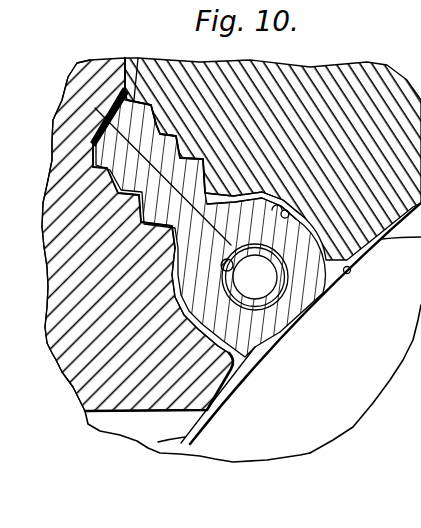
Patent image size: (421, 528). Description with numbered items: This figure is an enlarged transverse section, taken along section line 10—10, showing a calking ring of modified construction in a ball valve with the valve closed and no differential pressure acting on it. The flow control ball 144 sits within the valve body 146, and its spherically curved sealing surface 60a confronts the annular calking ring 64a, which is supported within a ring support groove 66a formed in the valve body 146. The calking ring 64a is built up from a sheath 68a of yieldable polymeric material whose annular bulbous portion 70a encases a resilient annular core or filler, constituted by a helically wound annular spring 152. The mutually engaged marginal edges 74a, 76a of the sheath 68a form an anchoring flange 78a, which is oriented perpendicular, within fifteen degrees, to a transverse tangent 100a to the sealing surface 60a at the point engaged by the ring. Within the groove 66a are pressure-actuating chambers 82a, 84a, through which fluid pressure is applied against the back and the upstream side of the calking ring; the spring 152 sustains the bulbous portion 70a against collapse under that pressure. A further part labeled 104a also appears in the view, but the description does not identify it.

The section line 10 is at (414, 458).
The spherically curved sealing surface 60a is at (350, 273).
The calking ring 64a is at (248, 369).
The ring support groove 66a is at (289, 212).
The sheath 68a is at (297, 316).
The annular bulbous portion 70a is at (159, 382).
The marginal edge 74a is at (140, 227).
The marginal edge 76a is at (187, 150).
The anchoring flange 78a is at (135, 106).
The pressure-actuating chamber 82a is at (175, 307).
The pressure-actuating chamber 84a is at (262, 190).
The transverse tangent 100a is at (148, 450).
The holder side wall 104a is at (73, 353).
The flow control ball 144 is at (303, 437).
The valve body 146 is at (313, 65).
The helically wound annular spring 152 is at (281, 334).